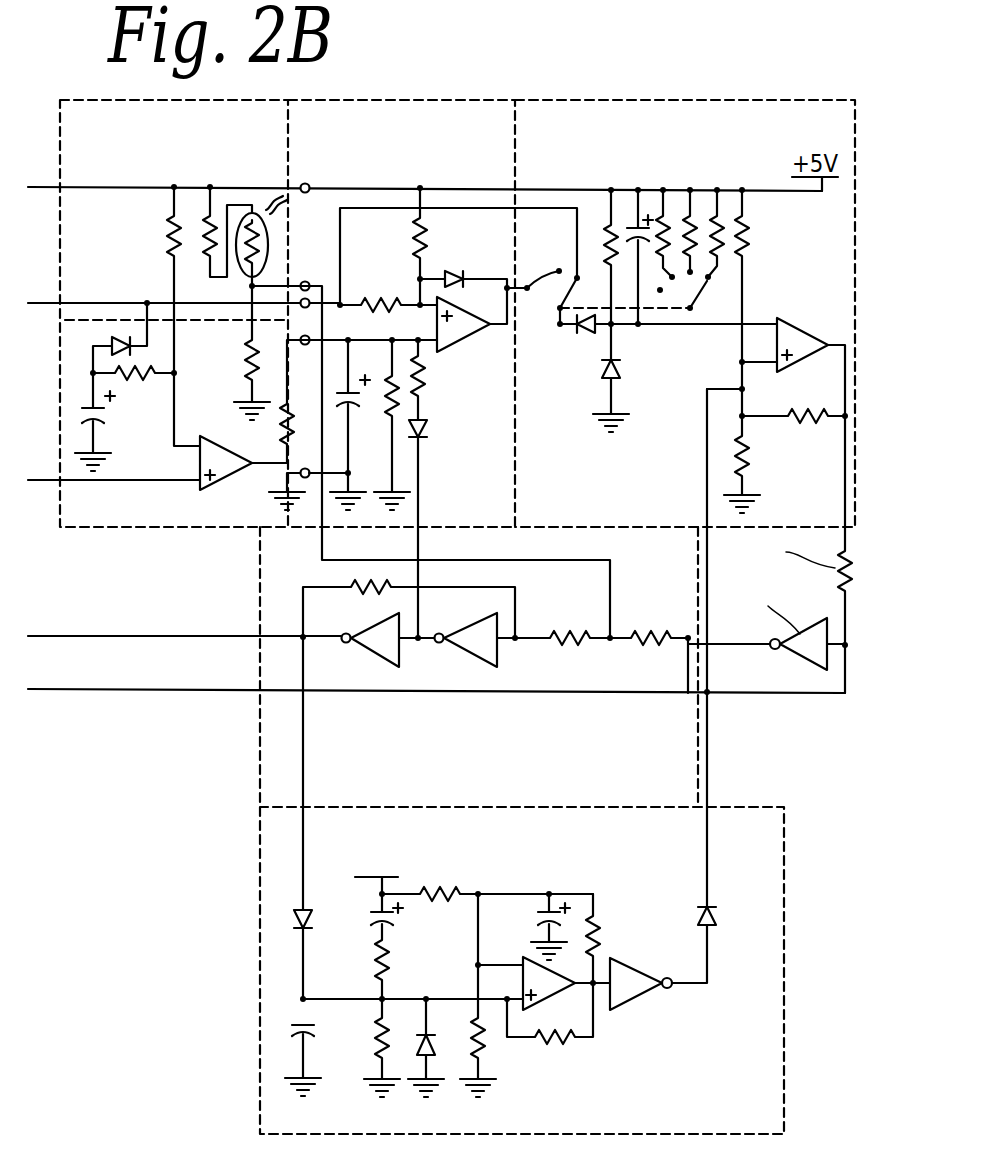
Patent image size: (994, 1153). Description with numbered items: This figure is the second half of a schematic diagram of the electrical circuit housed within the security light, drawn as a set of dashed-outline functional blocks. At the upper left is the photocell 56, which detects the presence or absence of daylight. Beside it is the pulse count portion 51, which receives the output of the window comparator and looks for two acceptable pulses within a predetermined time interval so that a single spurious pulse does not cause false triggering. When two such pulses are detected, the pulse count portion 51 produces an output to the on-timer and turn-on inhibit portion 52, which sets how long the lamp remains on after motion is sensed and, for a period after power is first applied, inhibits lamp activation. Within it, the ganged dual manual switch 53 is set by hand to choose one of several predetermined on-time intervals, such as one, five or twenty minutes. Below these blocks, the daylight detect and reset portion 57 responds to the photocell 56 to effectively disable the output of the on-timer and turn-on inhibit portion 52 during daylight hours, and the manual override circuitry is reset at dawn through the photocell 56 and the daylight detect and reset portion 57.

The pulse count portion 51 is at (410, 100).
The on-timer and turn-on inhibit portion 52 is at (685, 378).
The ganged dual manual switch 53 is at (702, 296).
The photocell 56 is at (88, 98).
The daylight detect and reset portion 57 is at (255, 750).